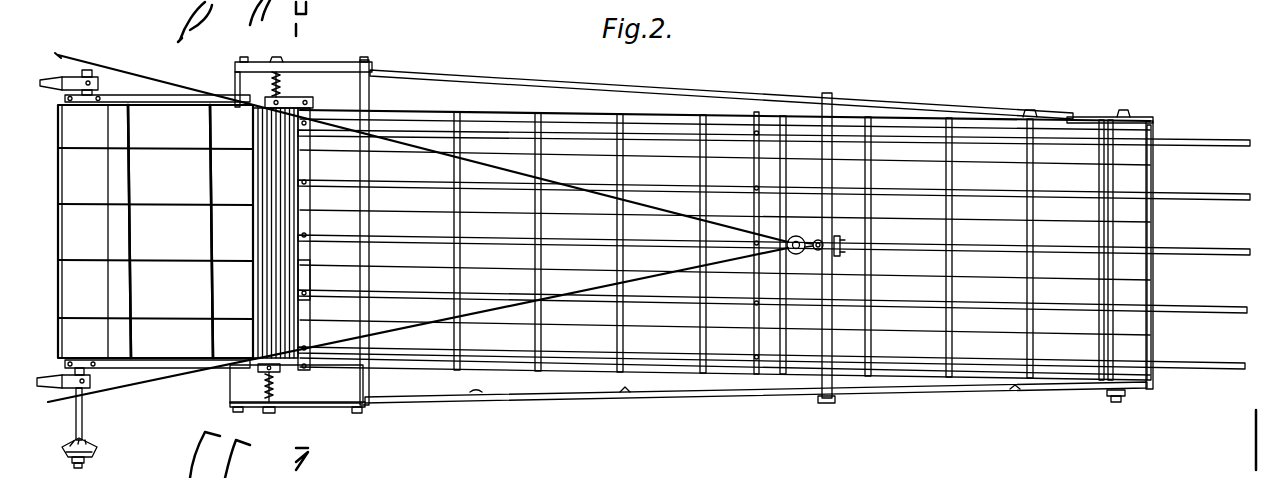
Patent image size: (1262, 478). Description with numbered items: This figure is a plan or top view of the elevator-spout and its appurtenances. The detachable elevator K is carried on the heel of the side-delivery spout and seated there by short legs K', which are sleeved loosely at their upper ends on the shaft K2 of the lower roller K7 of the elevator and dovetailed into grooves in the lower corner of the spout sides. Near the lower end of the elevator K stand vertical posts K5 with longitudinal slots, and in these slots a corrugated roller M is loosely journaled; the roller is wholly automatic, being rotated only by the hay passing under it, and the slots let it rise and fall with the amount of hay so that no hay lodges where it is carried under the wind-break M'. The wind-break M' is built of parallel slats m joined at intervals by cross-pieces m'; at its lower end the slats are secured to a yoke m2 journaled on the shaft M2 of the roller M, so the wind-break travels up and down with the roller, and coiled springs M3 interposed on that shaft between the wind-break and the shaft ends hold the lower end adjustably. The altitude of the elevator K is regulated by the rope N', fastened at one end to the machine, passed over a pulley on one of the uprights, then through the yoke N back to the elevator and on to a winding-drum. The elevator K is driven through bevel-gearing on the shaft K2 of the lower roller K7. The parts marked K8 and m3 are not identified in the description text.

The detachable elevator K is at (759, 229).
The short legs K' is at (142, 224).
The shaft of the lower roller K2 is at (84, 416).
The vertical posts K5 is at (308, 62).
The lower roller K7 is at (155, 231).
The frame upright K8 is at (211, 235).
The corrugated roller M is at (260, 233).
The wind-break M' is at (791, 246).
The shaft of the roller M2 is at (275, 408).
The coiled springs M3 is at (281, 86).
The parallel slats m is at (774, 249).
The cross-pieces m' is at (774, 246).
The yoke m2 is at (310, 167).
The perforated bar m3 is at (310, 278).
The yoke N is at (820, 237).
The rope N' is at (418, 227).